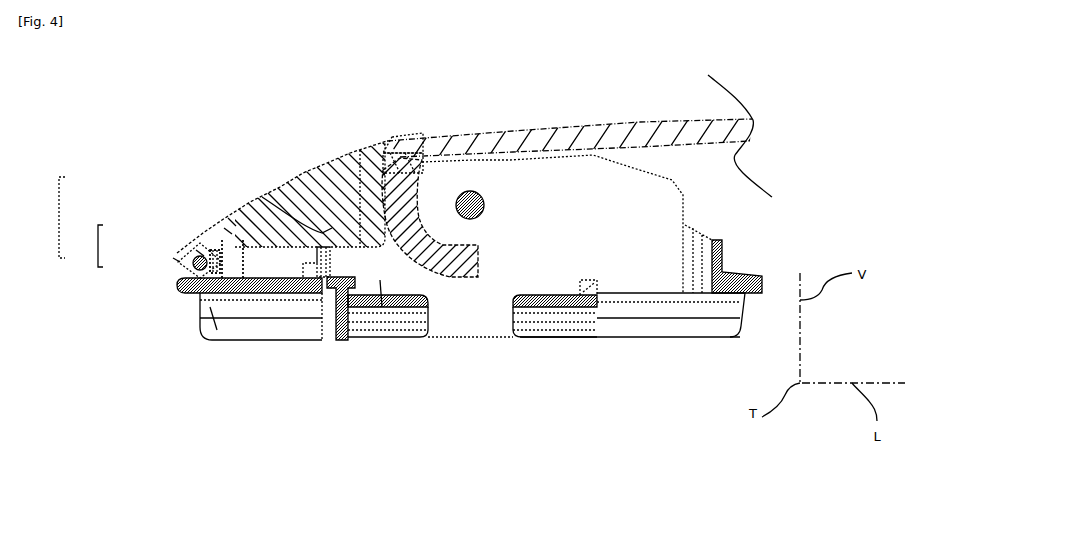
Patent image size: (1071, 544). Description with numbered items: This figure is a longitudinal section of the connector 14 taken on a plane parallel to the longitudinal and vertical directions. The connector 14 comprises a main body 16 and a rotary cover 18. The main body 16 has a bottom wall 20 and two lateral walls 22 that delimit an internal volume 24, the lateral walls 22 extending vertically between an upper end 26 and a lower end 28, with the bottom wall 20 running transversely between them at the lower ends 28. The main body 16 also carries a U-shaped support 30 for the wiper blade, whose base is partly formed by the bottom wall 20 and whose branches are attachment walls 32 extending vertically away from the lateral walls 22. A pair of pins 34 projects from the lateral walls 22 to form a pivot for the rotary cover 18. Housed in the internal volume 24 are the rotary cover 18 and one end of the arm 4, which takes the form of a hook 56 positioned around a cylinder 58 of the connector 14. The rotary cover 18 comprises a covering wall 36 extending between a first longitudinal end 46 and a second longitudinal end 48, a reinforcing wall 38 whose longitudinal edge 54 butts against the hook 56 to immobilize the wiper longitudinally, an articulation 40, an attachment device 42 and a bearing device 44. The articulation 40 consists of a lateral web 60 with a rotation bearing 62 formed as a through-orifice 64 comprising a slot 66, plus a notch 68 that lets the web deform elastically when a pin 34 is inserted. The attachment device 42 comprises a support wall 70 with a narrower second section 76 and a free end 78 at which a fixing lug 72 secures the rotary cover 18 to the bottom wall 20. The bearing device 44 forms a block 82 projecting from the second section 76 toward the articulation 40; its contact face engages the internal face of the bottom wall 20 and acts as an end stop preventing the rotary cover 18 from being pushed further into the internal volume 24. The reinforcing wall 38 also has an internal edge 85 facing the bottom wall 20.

The arm 4 is at (609, 137).
The connector 14 is at (328, 118).
The main body 16 is at (688, 327).
The rotary cover 18 is at (356, 118).
The bottom wall 20 is at (283, 320).
The lateral walls 22 is at (639, 275).
The internal volume 24 is at (395, 328).
The upper end 26 is at (667, 127).
The lower end 28 is at (357, 343).
The support 30 is at (180, 280).
The attachment wall 32 is at (607, 328).
The pins 34 is at (212, 307).
The covering wall 36 is at (298, 173).
The reinforcing wall 38 is at (320, 200).
The articulation 40 is at (58, 215).
The attachment device 42 is at (372, 166).
The bearing device 44 is at (243, 232).
The first longitudinal end 46 is at (173, 267).
The second longitudinal end 48 is at (420, 130).
The longitudinal edge 54 is at (440, 140).
The hook 56 is at (430, 253).
The cylinder 58 is at (474, 190).
The lateral web 60 is at (232, 222).
The rotation bearing 62 is at (97, 245).
The through-orifice 64 is at (200, 253).
The slot 66 is at (173, 258).
The notch 68 is at (227, 230).
The support wall 70 is at (310, 277).
The fixing lug 72 is at (277, 300).
The second section 76 is at (232, 259).
The free end 78 is at (329, 320).
The block 82 is at (215, 261).
The internal edge 85 is at (248, 290).